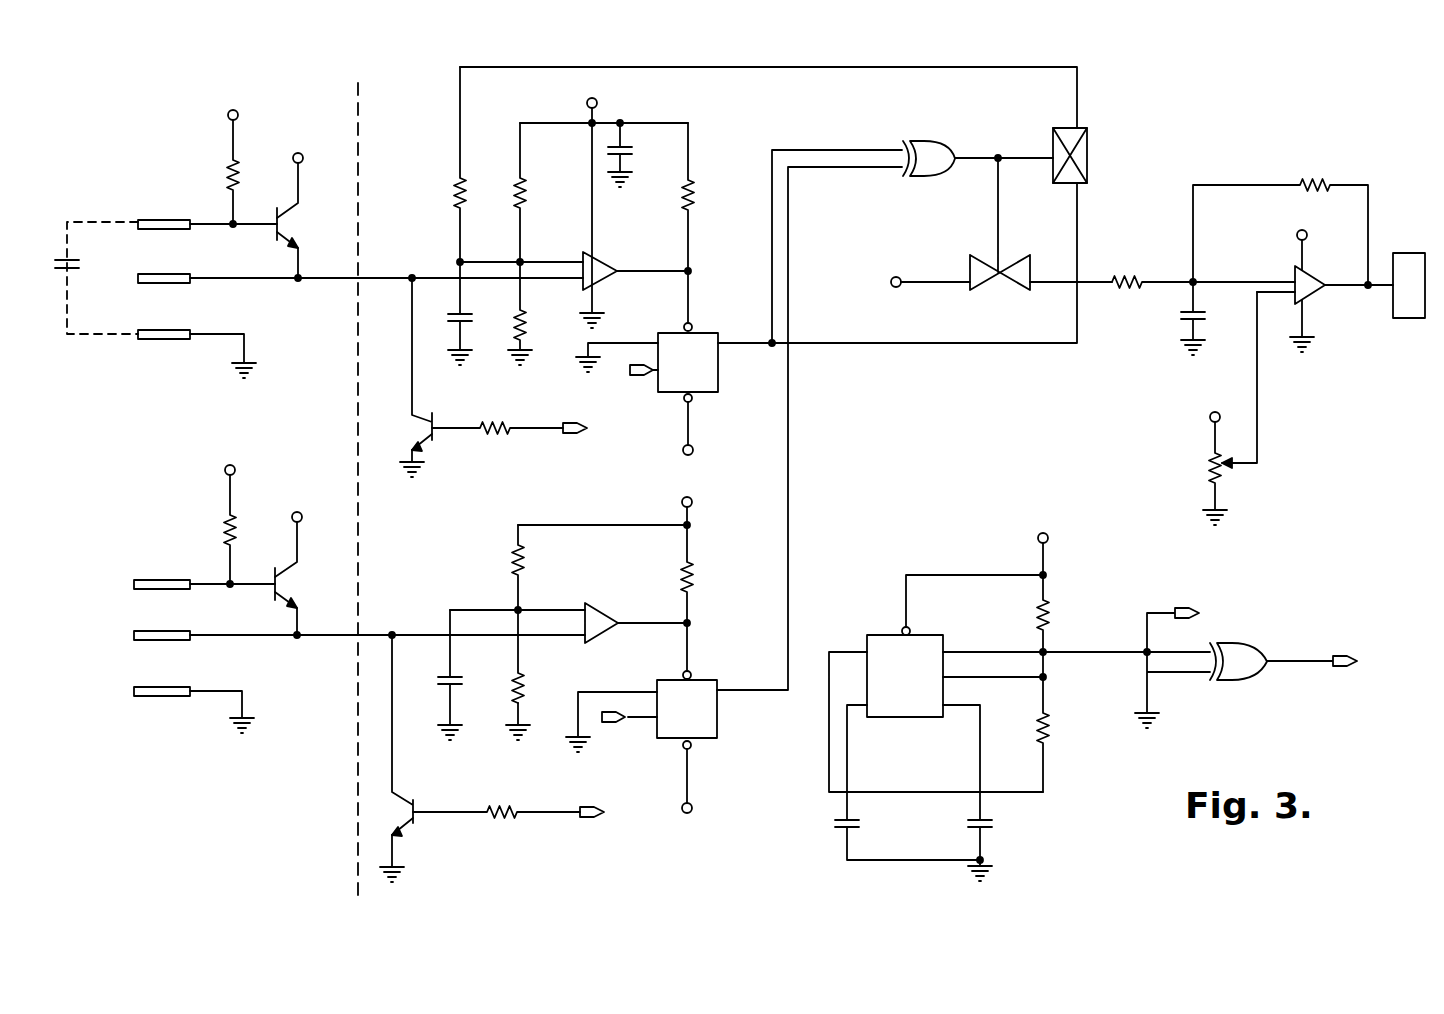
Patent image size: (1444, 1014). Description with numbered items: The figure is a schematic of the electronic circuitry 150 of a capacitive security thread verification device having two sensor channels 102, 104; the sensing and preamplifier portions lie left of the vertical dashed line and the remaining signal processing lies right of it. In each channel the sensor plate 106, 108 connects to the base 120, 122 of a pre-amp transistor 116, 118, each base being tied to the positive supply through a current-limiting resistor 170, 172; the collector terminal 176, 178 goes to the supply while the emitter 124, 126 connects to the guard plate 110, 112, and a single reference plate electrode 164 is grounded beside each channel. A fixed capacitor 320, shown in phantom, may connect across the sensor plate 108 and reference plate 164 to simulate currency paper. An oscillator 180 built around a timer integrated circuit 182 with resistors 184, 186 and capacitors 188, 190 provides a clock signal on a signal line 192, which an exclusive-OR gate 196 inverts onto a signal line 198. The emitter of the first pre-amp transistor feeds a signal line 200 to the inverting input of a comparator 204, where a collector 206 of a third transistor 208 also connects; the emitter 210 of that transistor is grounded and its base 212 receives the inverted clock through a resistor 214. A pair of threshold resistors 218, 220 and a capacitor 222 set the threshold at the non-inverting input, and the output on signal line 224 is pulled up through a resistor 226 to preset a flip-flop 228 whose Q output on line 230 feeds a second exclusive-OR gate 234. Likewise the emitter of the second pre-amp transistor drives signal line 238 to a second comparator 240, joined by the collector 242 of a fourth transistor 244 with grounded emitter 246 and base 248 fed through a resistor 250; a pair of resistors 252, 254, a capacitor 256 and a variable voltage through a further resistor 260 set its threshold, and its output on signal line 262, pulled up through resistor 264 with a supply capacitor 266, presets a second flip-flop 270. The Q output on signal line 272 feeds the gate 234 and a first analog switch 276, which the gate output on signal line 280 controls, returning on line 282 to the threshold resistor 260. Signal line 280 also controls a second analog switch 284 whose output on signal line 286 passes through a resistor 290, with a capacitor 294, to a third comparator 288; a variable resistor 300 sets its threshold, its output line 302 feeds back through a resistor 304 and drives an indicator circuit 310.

The sensor channel 102 is at (146, 504).
The sensor channel 104 is at (144, 122).
The sensor plate 106 is at (172, 590).
The sensor plate 108 is at (165, 230).
The guard plate 110 is at (172, 640).
The guard plate 112 is at (180, 284).
The pre-amp transistor Q1 116 is at (296, 567).
The pre-amp transistor Q2 118 is at (296, 209).
The base 120 is at (274, 593).
The base 122 is at (275, 232).
The emitter 124 is at (308, 605).
The emitter 126 is at (308, 241).
The electronic circuitry 150 is at (356, 68).
The reference plate electrode 164 is at (168, 340).
The current-limiting resistor 170 is at (228, 518).
The current-limiting resistor 172 is at (230, 159).
The collector terminal 176 is at (302, 550).
The collector terminal 178 is at (304, 190).
The oscillator 180 is at (924, 544).
The timer integrated circuit 182 is at (894, 630).
The resistor 184 is at (1048, 726).
The resistor 186 is at (1048, 604).
The capacitor 188 is at (844, 829).
The capacitor 190 is at (986, 830).
The signal line 192 is at (628, 372).
The exclusive-OR gate 196 is at (1242, 652).
The signal line 198 is at (594, 429).
The signal line 200 is at (374, 634).
The comparator 204 is at (598, 609).
The collector 206 is at (410, 816).
The transistor Q3 208 is at (416, 832).
The emitter 210 is at (386, 835).
The base 212 is at (416, 800).
The resistor 214 is at (514, 814).
The resistor R10 218 is at (512, 550).
The resistor R11 220 is at (528, 705).
The capacitor 222 is at (460, 674).
The signal line 224 is at (644, 625).
The resistor 226 is at (702, 568).
The flip-flop 228 is at (718, 740).
The line 230 is at (848, 168).
The second exclusive-OR gate 234 is at (930, 140).
The signal line 238 is at (370, 278).
The second comparator 240 is at (612, 263).
The collector 242 is at (431, 380).
The transistor Q4 244 is at (432, 444).
The emitter 246 is at (406, 442).
The base 248 is at (436, 420).
The resistor 250 is at (508, 422).
The resistor R7 252 is at (520, 186).
The resistor R8 254 is at (524, 312).
The capacitor 256 is at (468, 314).
The resistor R6 260 is at (460, 180).
The signal line 262 is at (714, 259).
The resistor 264 is at (692, 186).
The capacitor 266 is at (628, 150).
The second flip-flop 270 is at (720, 395).
The signal line 272 is at (818, 147).
The first analog switch 276 is at (1090, 161).
The signal line 280 is at (1008, 158).
The line 282 is at (829, 67).
The second analog switch 284 is at (1000, 290).
The signal line 286 is at (1050, 280).
The third comparator 288 is at (1320, 278).
The resistor 290 is at (1138, 270).
The capacitor 294 is at (1202, 312).
The variable resistor 300 is at (1222, 482).
The line 302 is at (1352, 290).
The resistor 304 is at (1286, 184).
The indicator circuit 310 is at (1410, 253).
The fixed capacitor 320 is at (70, 258).